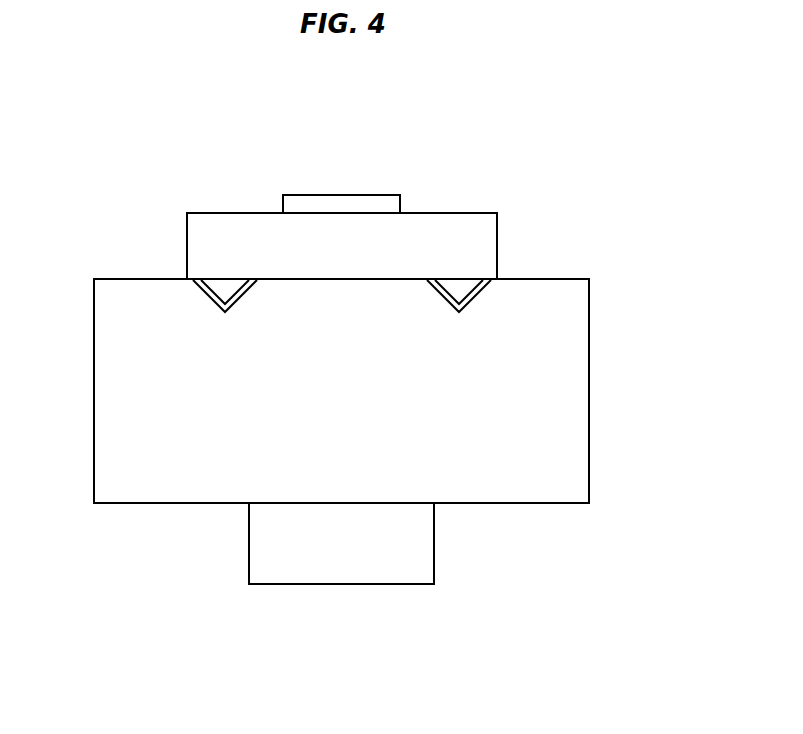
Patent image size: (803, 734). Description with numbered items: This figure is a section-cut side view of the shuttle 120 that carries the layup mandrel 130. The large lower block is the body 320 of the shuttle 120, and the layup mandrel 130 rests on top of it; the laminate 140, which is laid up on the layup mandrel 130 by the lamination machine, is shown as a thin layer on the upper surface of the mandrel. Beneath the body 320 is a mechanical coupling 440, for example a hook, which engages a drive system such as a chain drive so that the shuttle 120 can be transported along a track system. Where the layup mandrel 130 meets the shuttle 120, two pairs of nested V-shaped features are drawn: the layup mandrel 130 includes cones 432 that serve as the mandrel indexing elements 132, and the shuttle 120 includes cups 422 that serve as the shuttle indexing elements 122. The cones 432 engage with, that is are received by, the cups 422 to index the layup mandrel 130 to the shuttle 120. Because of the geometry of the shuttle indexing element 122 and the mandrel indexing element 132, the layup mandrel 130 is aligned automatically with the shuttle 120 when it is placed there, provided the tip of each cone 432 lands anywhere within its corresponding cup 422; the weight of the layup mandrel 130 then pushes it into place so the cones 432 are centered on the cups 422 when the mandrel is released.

The shuttle 120 is at (655, 420).
The shuttle indexing element 122 is at (477, 295).
The layup mandrel 130 is at (485, 212).
The mandrel indexing element 132 is at (458, 287).
The laminate 140 is at (362, 194).
The body 320 is at (93, 421).
The cups 422 is at (207, 295).
The cones 432 is at (222, 285).
The mechanical coupling 440 is at (341, 543).